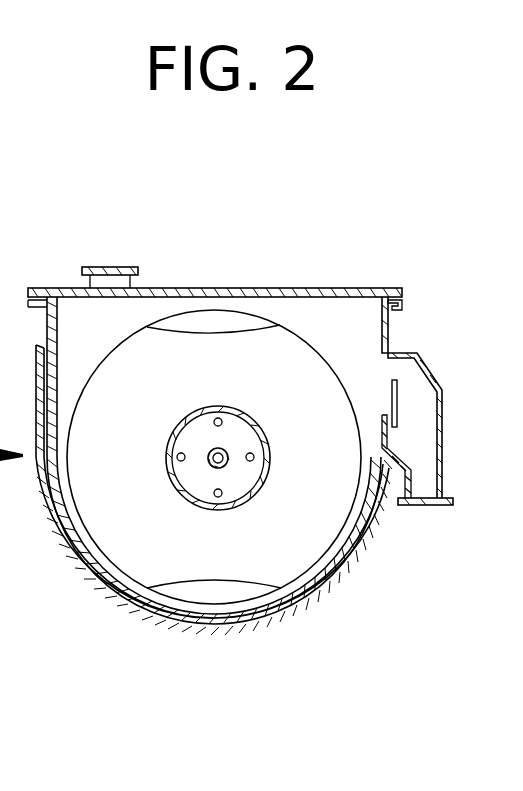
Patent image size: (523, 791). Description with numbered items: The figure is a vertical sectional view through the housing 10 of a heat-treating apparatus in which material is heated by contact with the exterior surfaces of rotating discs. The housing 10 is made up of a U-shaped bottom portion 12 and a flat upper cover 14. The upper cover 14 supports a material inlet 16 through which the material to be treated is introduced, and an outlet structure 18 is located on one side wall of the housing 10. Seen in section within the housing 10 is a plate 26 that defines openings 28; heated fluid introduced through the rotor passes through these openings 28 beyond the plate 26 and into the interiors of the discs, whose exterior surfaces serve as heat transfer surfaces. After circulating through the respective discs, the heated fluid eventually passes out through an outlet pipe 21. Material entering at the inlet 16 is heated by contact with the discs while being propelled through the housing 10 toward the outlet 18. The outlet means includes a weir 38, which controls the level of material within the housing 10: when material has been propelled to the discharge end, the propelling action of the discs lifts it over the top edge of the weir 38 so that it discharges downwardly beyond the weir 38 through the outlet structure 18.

The housing 10 is at (445, 295).
The U-shaped bottom portion 12 is at (130, 612).
The flat upper cover 14 is at (248, 287).
The material inlet 16 is at (122, 266).
The outlet structure 18 is at (443, 455).
The outlet pipe 21 is at (212, 465).
The plate 26 is at (192, 432).
The openings 28 is at (220, 417).
The weir 38 is at (397, 398).